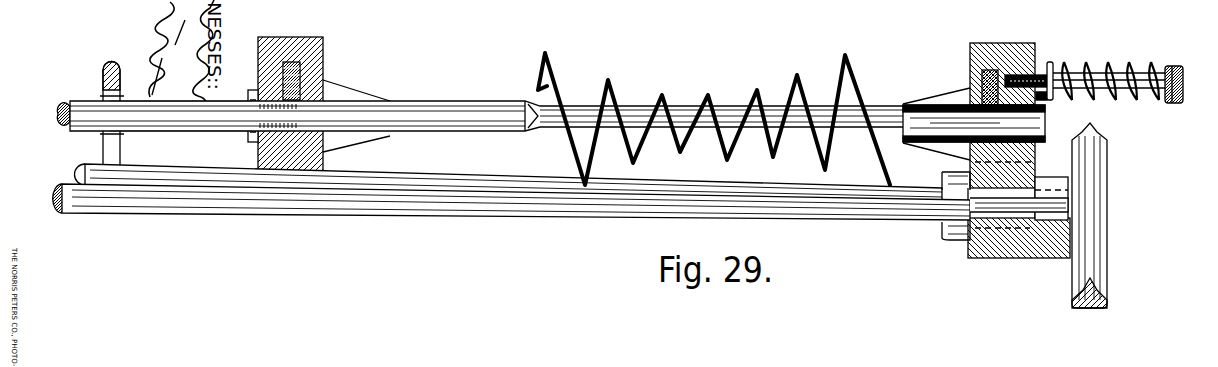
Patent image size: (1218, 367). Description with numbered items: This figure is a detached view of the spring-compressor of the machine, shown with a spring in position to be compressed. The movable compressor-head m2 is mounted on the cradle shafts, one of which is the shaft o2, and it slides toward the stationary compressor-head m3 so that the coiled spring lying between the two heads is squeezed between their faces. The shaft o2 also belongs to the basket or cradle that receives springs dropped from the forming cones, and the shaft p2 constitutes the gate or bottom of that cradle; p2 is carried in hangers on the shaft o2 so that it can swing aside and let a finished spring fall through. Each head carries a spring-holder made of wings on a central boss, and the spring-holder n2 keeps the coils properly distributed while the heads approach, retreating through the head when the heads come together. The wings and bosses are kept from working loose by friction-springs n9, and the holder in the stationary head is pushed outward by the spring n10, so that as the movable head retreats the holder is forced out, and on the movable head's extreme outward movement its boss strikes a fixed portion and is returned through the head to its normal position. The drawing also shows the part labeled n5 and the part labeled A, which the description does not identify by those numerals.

The movable compressor-head m2 is at (281, 165).
The stationary compressor-head m3 is at (997, 245).
The spring-holder n2 is at (421, 117).
The sleeve n5 is at (951, 105).
The friction-springs n9 is at (321, 47).
The spring n10 is at (1112, 63).
The shaft o2 is at (198, 128).
The shaft p2 is at (562, 205).
The wheel A is at (1088, 251).